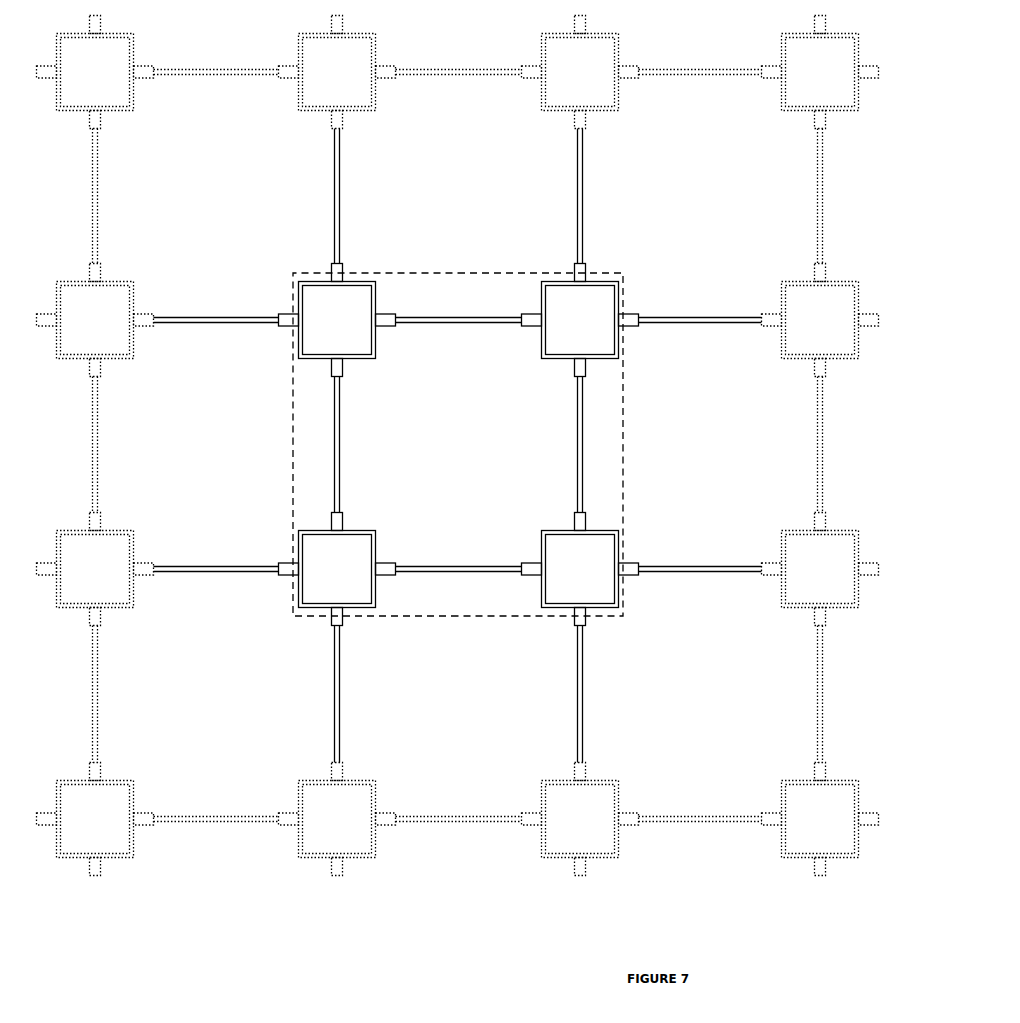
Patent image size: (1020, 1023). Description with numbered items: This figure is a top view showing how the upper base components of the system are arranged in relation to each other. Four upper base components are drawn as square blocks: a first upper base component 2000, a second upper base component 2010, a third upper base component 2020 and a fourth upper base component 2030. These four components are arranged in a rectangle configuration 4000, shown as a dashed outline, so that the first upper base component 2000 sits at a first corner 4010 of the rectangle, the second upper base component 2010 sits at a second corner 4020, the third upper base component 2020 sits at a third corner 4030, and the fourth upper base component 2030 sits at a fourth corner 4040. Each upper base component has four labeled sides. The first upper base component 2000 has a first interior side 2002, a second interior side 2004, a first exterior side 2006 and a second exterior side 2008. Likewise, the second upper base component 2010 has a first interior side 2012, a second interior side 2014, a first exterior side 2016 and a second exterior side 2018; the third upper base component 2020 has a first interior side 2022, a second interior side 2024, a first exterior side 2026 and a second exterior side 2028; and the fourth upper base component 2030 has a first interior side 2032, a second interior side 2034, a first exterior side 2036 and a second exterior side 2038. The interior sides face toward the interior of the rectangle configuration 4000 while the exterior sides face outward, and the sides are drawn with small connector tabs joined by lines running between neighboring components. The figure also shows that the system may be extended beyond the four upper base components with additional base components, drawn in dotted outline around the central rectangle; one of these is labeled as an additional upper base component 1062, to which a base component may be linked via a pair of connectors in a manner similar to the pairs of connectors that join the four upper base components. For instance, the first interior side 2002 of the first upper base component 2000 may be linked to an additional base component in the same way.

The additional upper base component 1062 is at (108, 360).
The first upper base component 2000 is at (331, 307).
The first interior side 2002 is at (365, 360).
The second interior side 2004 is at (376, 297).
The first exterior side 2006 is at (350, 282).
The second exterior side 2008 is at (290, 342).
The second upper base component 2010 is at (584, 314).
The first interior side 2012 is at (540, 332).
The second interior side 2014 is at (562, 358).
The first exterior side 2016 is at (587, 277).
The second exterior side 2018 is at (622, 332).
The third upper base component 2020 is at (587, 589).
The first interior side 2022 is at (540, 583).
The second interior side 2024 is at (558, 530).
The first exterior side 2026 is at (597, 613).
The second exterior side 2028 is at (622, 545).
The fourth upper base component 2030 is at (325, 572).
The first interior side 2032 is at (347, 532).
The second interior side 2034 is at (377, 595).
The first exterior side 2036 is at (343, 608).
The second exterior side 2038 is at (300, 543).
The rectangle configuration 4000 is at (470, 443).
The first corner 4010 is at (293, 274).
The second corner 4020 is at (624, 272).
The third corner 4030 is at (620, 614).
The fourth corner 4040 is at (293, 618).